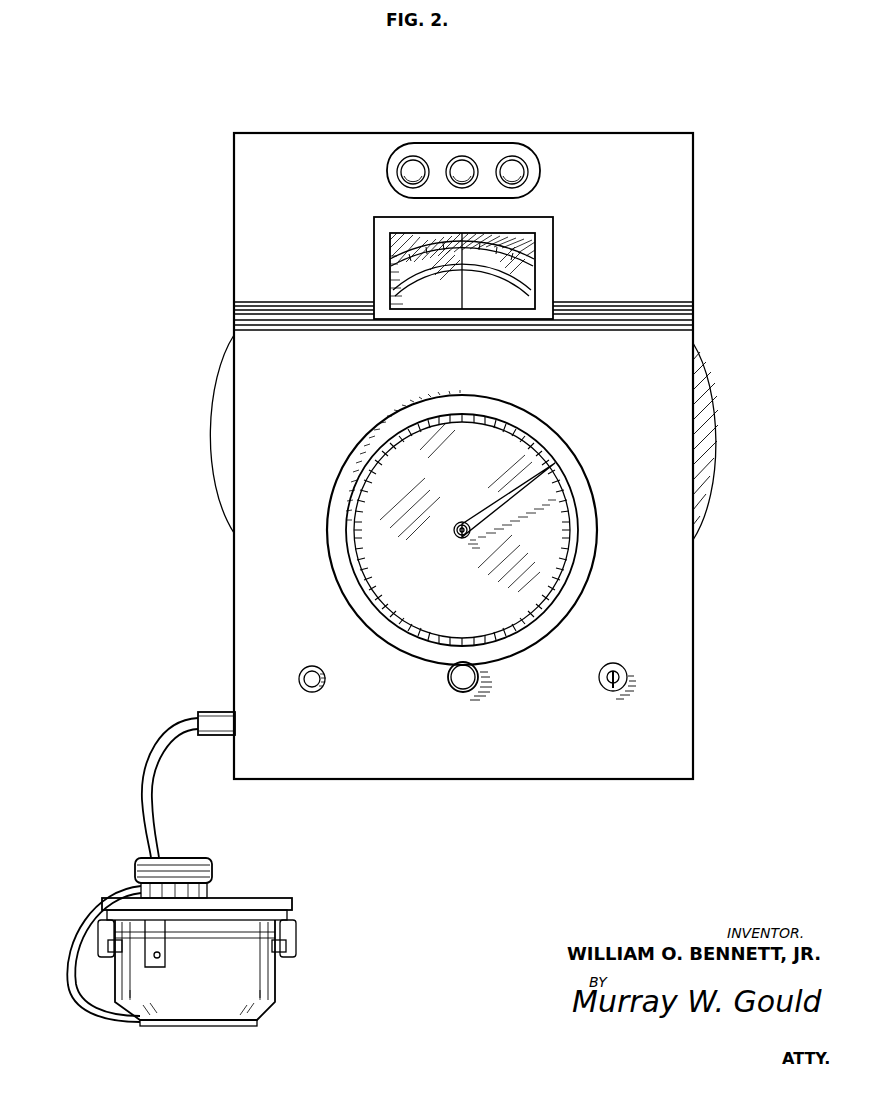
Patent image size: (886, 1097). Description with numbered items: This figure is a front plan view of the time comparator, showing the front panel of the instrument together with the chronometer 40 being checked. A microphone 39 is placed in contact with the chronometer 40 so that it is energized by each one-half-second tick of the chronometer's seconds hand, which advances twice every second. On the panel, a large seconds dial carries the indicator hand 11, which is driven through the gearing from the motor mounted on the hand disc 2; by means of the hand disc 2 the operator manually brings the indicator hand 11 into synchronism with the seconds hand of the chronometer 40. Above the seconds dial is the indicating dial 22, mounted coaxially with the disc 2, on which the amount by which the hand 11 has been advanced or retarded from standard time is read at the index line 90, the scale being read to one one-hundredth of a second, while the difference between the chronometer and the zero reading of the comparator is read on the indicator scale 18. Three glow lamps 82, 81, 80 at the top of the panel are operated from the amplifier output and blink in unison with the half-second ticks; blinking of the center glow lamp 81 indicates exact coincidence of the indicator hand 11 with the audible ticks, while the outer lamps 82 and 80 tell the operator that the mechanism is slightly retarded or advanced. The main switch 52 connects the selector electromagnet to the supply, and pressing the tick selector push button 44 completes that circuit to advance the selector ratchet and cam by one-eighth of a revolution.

The disc 2 is at (716, 440).
The indicator hand 11 is at (520, 498).
The indicator scale 18 is at (693, 301).
The indicating dial 22 is at (554, 208).
The microphone 39 is at (212, 877).
The chronometer 40 is at (278, 900).
The tick selector push button 44 is at (313, 687).
The main switch 52 is at (620, 666).
The glow lamp 80 is at (518, 160).
The glow lamp 81 is at (465, 170).
The glow lamp 82 is at (416, 172).
The index line 90 is at (514, 235).